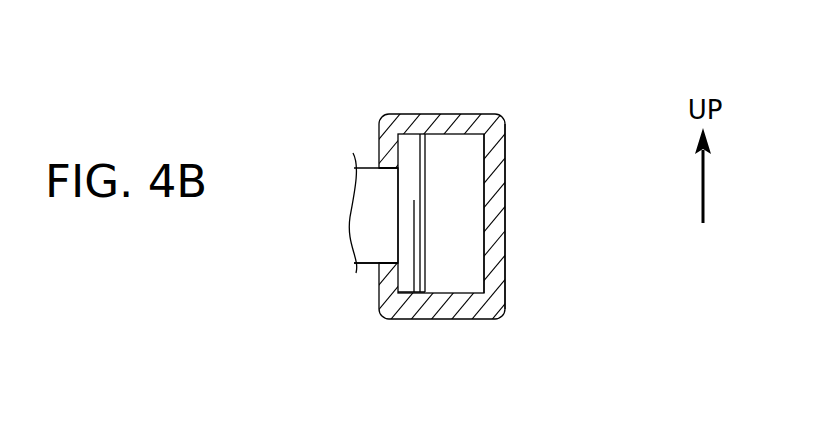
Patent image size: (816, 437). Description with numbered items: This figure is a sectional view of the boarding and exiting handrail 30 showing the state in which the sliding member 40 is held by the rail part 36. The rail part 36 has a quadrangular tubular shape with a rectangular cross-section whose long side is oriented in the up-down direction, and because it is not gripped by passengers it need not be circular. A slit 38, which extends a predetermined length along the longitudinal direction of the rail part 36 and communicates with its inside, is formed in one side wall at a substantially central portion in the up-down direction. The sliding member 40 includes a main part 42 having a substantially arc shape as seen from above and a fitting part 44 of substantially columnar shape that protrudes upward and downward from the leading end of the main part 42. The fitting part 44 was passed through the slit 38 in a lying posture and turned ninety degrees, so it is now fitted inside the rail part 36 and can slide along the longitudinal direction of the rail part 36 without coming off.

The boarding and exiting handrail 30 is at (484, 89).
The rail part 36 is at (508, 177).
The slit 38 is at (378, 265).
The sliding member 40 is at (368, 166).
The main part 42 is at (370, 221).
The fitting part 44 is at (417, 220).